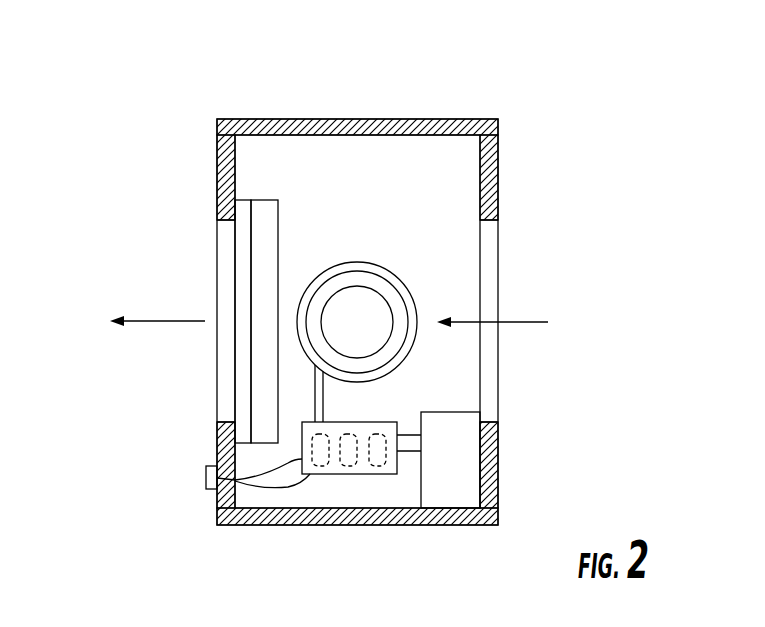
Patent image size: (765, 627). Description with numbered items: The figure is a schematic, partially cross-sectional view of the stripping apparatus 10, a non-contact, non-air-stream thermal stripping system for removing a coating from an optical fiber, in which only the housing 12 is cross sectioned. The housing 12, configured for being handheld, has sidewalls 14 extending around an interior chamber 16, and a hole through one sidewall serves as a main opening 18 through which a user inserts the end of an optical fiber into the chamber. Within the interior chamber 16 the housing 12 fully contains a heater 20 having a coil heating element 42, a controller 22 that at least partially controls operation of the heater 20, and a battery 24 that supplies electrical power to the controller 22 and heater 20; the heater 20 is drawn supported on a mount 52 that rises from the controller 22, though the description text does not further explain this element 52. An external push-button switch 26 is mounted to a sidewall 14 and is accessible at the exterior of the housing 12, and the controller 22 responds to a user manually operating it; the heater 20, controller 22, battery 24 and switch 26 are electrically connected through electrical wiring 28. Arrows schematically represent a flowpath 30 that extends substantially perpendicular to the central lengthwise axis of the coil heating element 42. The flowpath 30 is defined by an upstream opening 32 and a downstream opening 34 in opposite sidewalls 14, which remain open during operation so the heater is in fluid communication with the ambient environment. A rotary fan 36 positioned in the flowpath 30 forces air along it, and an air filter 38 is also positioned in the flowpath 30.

The stripping apparatus 10 is at (512, 97).
The housing 12 is at (365, 112).
The sidewall 14 is at (277, 119).
The interior chamber 16 is at (428, 172).
The main opening 18 is at (366, 306).
The heater 20 is at (410, 252).
The controller 22 is at (342, 475).
The battery 24 is at (449, 478).
The push-button switch 26 is at (206, 477).
The electrical wiring 28 is at (268, 489).
The flowpath 30 is at (166, 321).
The upstream opening 32 is at (488, 390).
The downstream opening 34 is at (233, 407).
The rotary fan 36 is at (276, 254).
The air filter 38 is at (244, 210).
The coil heating element 42 is at (425, 290).
The camera mount 52 is at (322, 413).